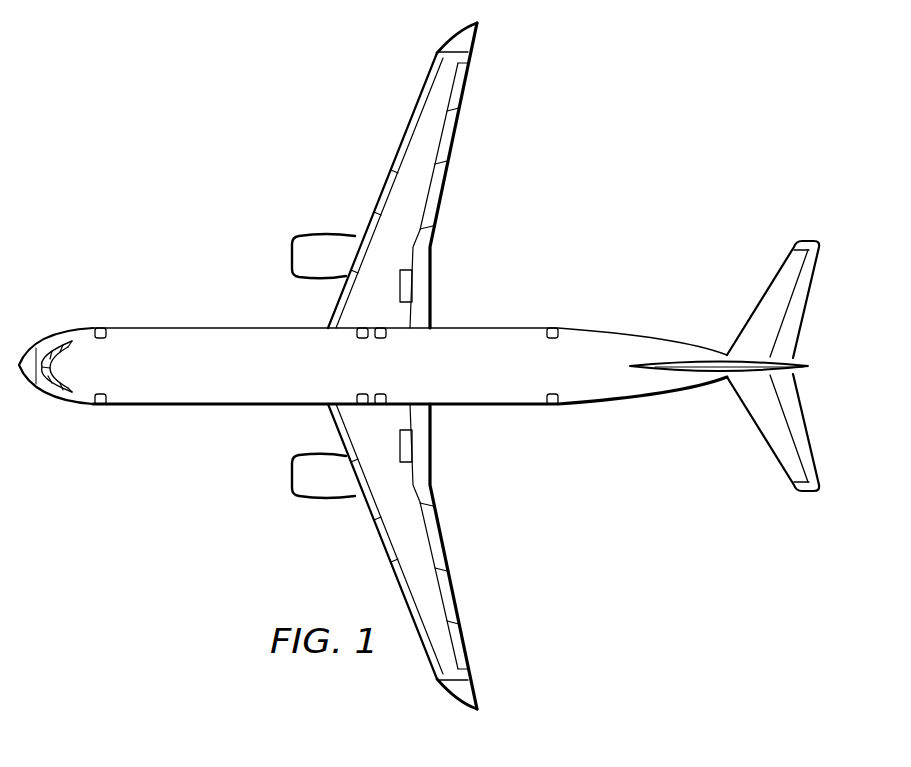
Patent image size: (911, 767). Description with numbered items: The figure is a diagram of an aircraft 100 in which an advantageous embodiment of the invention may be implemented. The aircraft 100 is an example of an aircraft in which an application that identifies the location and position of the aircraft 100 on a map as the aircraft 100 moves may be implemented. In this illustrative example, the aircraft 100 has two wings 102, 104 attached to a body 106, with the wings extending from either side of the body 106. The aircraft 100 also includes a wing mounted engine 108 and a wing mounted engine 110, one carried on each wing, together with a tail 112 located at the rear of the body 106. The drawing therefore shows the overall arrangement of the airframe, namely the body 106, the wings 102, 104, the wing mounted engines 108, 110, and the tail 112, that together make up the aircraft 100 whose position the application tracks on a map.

The aircraft 100 is at (283, 146).
The wing 102 is at (381, 183).
The wing 104 is at (381, 548).
The body 106 is at (199, 328).
The wing mounted engine 108 is at (293, 253).
The wing mounted engine 110 is at (293, 479).
The tail 112 is at (803, 317).